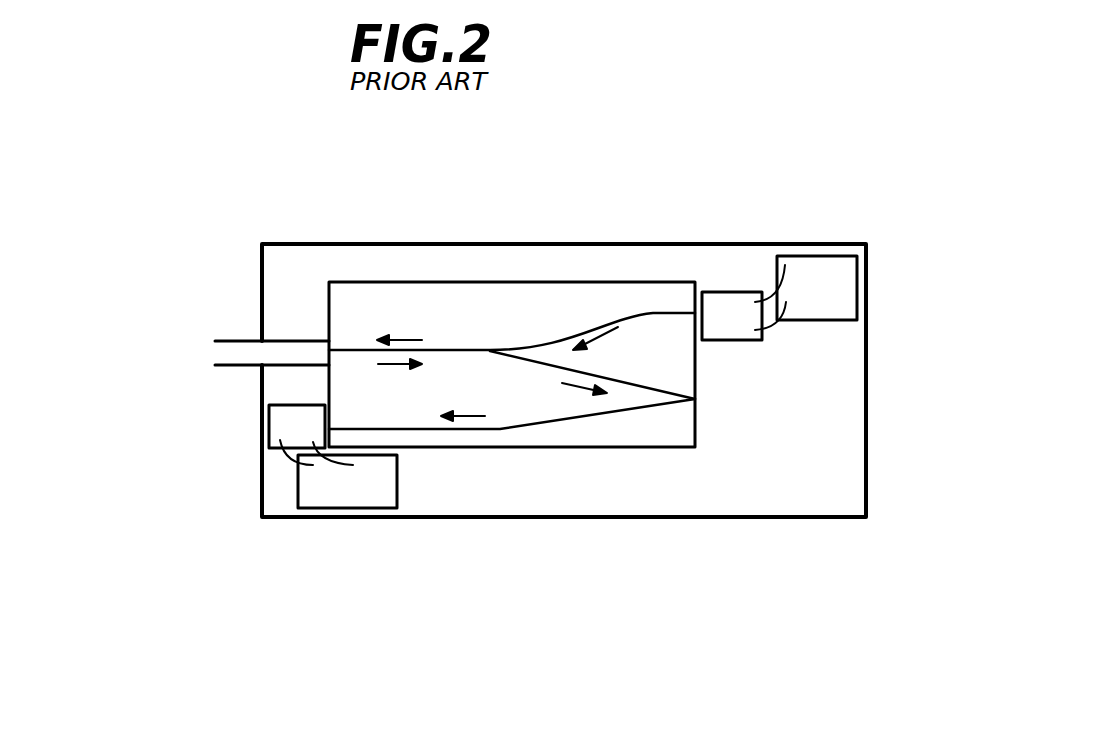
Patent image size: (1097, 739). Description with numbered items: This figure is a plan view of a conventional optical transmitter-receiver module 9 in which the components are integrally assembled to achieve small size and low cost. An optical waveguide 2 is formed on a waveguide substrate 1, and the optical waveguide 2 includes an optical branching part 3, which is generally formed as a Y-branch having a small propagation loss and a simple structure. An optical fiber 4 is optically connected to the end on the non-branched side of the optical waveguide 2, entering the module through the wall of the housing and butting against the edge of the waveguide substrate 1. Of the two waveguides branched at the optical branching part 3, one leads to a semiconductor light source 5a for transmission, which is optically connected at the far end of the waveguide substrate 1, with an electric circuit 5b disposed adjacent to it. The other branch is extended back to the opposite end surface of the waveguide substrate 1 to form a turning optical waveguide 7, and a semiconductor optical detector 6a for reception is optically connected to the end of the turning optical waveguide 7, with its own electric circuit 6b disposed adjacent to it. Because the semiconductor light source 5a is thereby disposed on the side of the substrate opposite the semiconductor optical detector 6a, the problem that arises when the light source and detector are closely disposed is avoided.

The waveguide substrate 1 is at (667, 452).
The optical waveguide 2 is at (445, 352).
The optical branching part 3 is at (521, 348).
The optical fiber 4 is at (253, 349).
The semiconductor light source 5a is at (745, 322).
The electric circuit 5b is at (836, 283).
The semiconductor optical detector 6a is at (288, 425).
The electric circuit 6b is at (327, 496).
The turning optical waveguide 7 is at (514, 432).
The optical transmitter-receiver module 9 is at (793, 518).